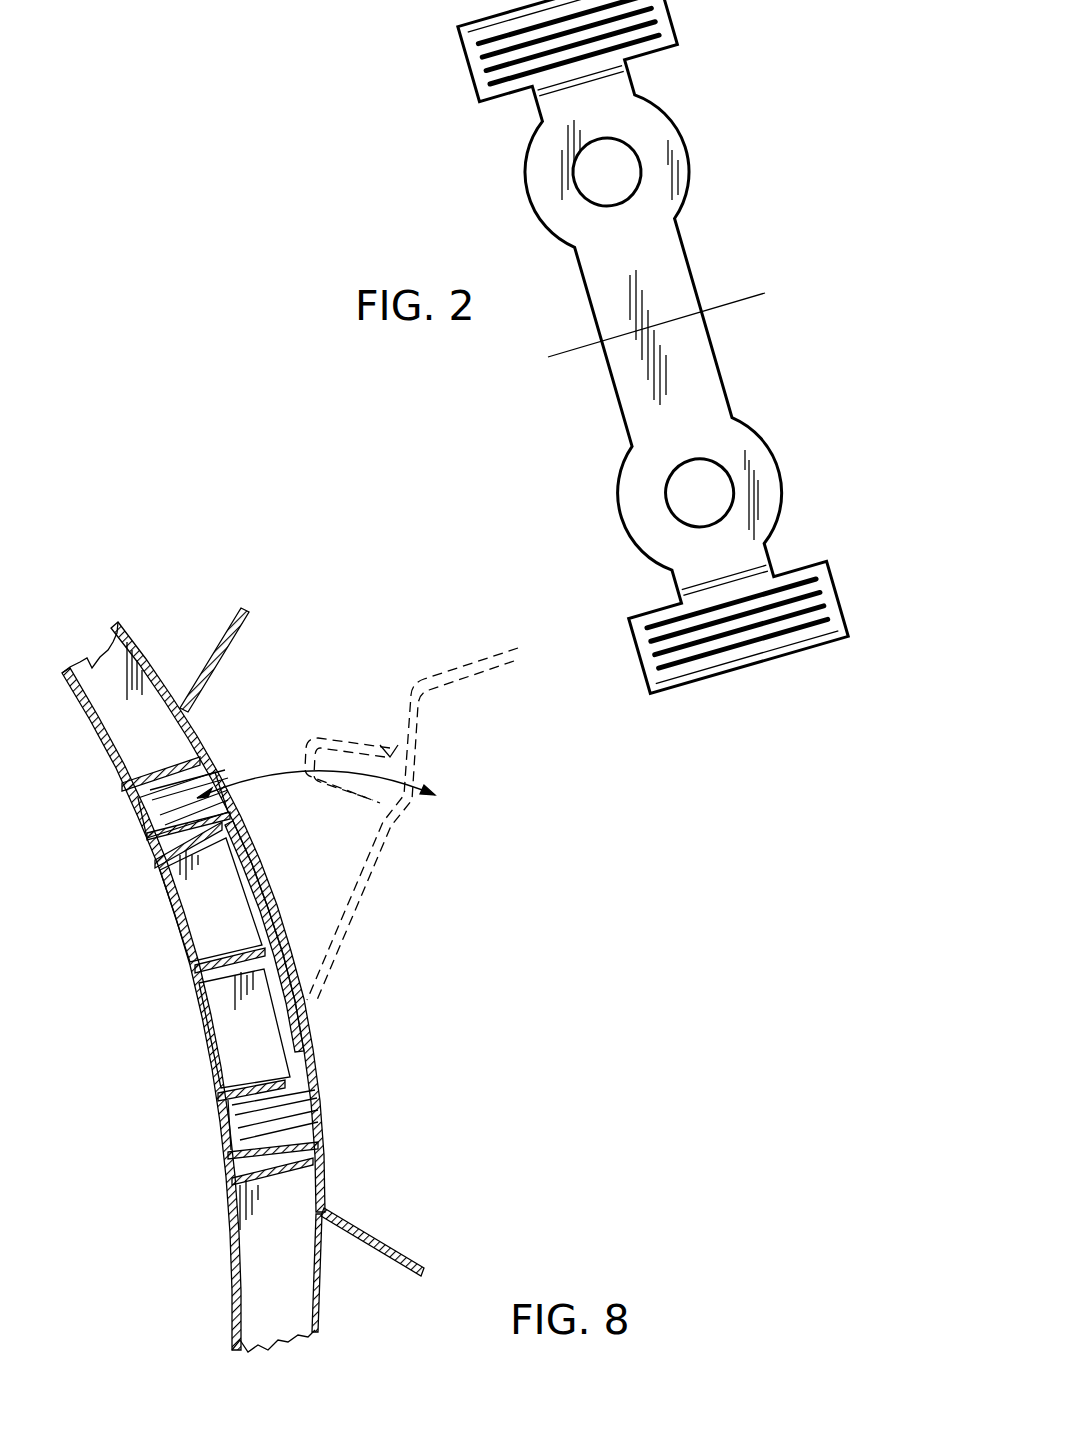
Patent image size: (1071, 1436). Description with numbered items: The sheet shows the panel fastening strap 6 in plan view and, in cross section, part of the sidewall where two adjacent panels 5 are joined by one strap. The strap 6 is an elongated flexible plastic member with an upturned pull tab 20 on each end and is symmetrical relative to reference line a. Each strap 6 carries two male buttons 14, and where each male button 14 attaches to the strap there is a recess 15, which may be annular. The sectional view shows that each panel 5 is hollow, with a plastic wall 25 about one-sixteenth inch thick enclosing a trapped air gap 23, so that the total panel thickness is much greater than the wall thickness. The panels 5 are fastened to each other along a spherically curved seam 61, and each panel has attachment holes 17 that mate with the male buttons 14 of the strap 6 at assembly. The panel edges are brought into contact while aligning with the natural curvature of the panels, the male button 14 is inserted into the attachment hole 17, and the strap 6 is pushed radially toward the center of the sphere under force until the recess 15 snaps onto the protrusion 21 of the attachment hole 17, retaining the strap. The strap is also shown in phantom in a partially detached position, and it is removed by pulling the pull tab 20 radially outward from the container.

In FIG. 2, the panel fastening strap 6 is at (672, 256).
In FIG. 8, the panel fastening strap 6 is at (367, 881).
In FIG. 2, the reference line a is at (664, 318).
In FIG. 8, the trapped air gap 23 is at (97, 668).
In FIG. 8, the plastic wall 25 is at (150, 657).
In FIG. 8, the pull tab 20 is at (231, 641).
In FIG. 8, the protrusion 21 is at (192, 754).
In FIG. 8, the attachment hole 17 is at (135, 798).
In FIG. 8, the panel 5 is at (167, 908).
In FIG. 8, the spherically curved seam 61 is at (223, 985).
In FIG. 8, the male button 14 is at (317, 732).
In FIG. 8, the recess 15 is at (390, 740).